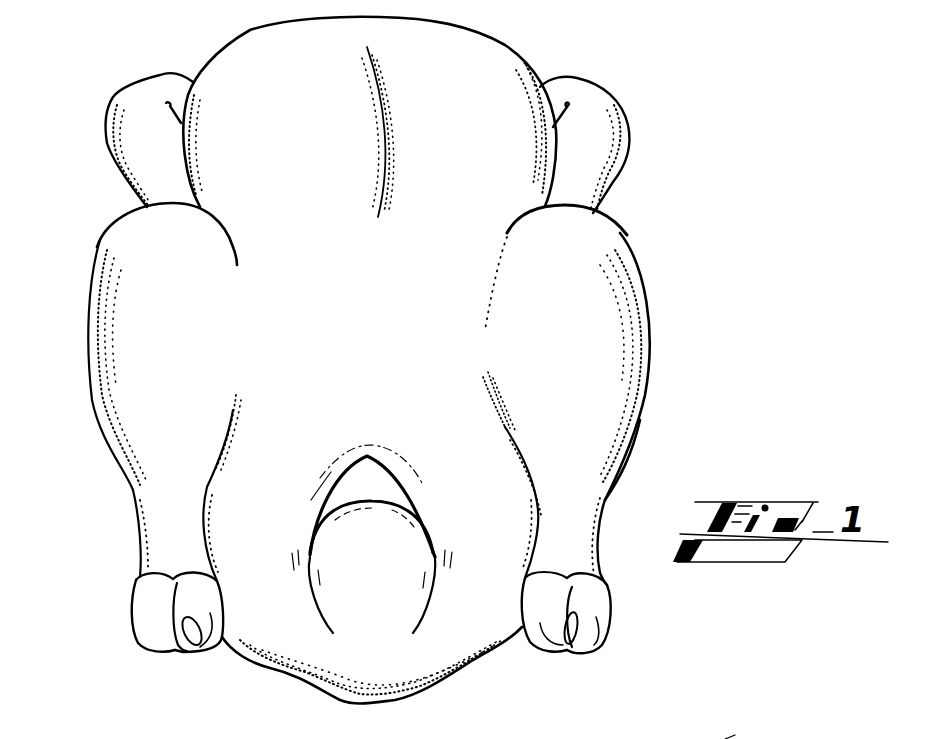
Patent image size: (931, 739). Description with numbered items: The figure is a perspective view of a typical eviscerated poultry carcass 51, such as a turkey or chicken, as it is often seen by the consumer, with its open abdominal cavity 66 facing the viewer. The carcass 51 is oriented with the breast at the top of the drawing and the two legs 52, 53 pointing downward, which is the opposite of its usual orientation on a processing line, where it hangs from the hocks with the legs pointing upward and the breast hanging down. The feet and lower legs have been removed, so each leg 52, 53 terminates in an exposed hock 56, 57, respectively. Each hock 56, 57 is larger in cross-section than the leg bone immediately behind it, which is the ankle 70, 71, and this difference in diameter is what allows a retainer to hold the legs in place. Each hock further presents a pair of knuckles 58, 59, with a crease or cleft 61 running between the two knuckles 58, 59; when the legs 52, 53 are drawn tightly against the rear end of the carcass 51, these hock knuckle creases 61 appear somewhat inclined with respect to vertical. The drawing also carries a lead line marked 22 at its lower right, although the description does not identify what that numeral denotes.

The eviscerated poultry carcass 51 is at (82, 113).
The leg 52 is at (600, 260).
The leg 53 is at (128, 280).
The hock 56 is at (573, 503).
The hock 57 is at (160, 530).
The knuckle 58 is at (540, 625).
The knuckle 59 is at (590, 612).
The crease or cleft 61 is at (195, 648).
The open abdominal cavity 66 is at (360, 452).
The ankle 70 is at (585, 570).
The ankle 71 is at (133, 583).
The tray 22 is at (728, 738).